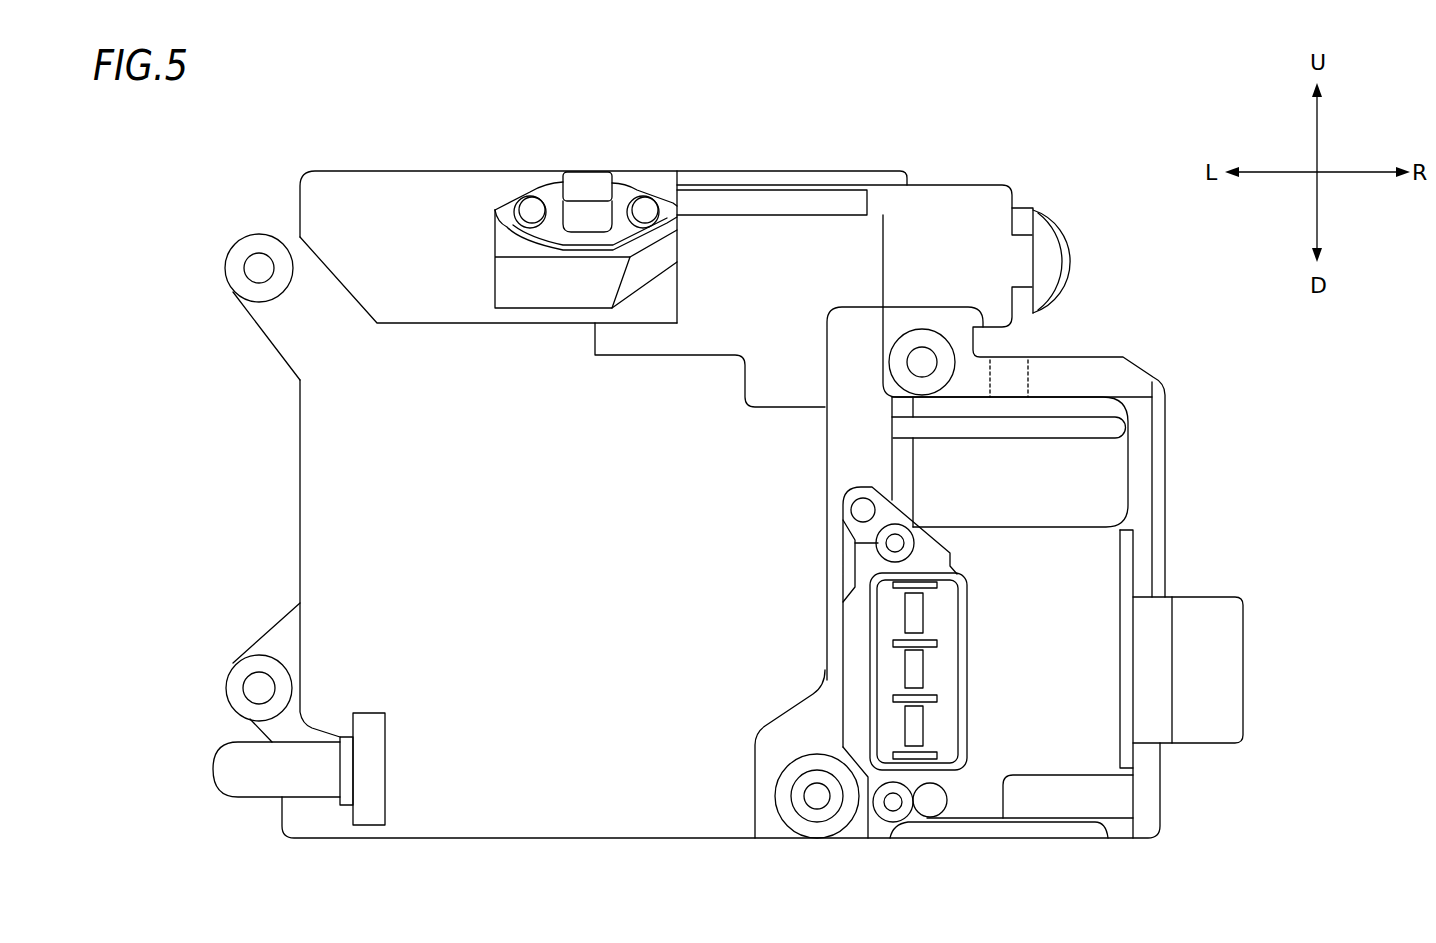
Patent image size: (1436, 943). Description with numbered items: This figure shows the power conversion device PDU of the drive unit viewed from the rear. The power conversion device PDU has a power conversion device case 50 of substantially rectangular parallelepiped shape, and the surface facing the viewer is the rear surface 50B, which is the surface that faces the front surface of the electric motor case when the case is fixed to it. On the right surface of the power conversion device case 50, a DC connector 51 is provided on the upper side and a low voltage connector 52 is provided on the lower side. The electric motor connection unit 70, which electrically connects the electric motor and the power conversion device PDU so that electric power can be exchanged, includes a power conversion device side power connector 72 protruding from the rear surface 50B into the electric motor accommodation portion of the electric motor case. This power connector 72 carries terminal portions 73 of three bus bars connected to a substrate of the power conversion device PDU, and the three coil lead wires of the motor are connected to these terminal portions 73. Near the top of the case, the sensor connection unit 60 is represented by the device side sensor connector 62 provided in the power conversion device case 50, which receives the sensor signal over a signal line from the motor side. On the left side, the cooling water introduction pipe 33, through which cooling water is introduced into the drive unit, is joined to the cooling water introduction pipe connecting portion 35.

The power conversion device PDU is at (905, 126).
The power conversion device case 50 is at (382, 183).
The rear surface 50B is at (760, 292).
The DC connector 51 is at (1045, 212).
The low voltage connector 52 is at (1233, 662).
The sensor connection unit 60 is at (596, 192).
The device side sensor connector 62 is at (612, 170).
The electric motor connection unit 70 is at (908, 628).
The power conversion device side power connector 72 is at (958, 640).
The terminal portions 73 is at (903, 735).
The cooling water introduction pipe 33 is at (223, 777).
The cooling water introduction pipe connecting portion 35 is at (348, 808).